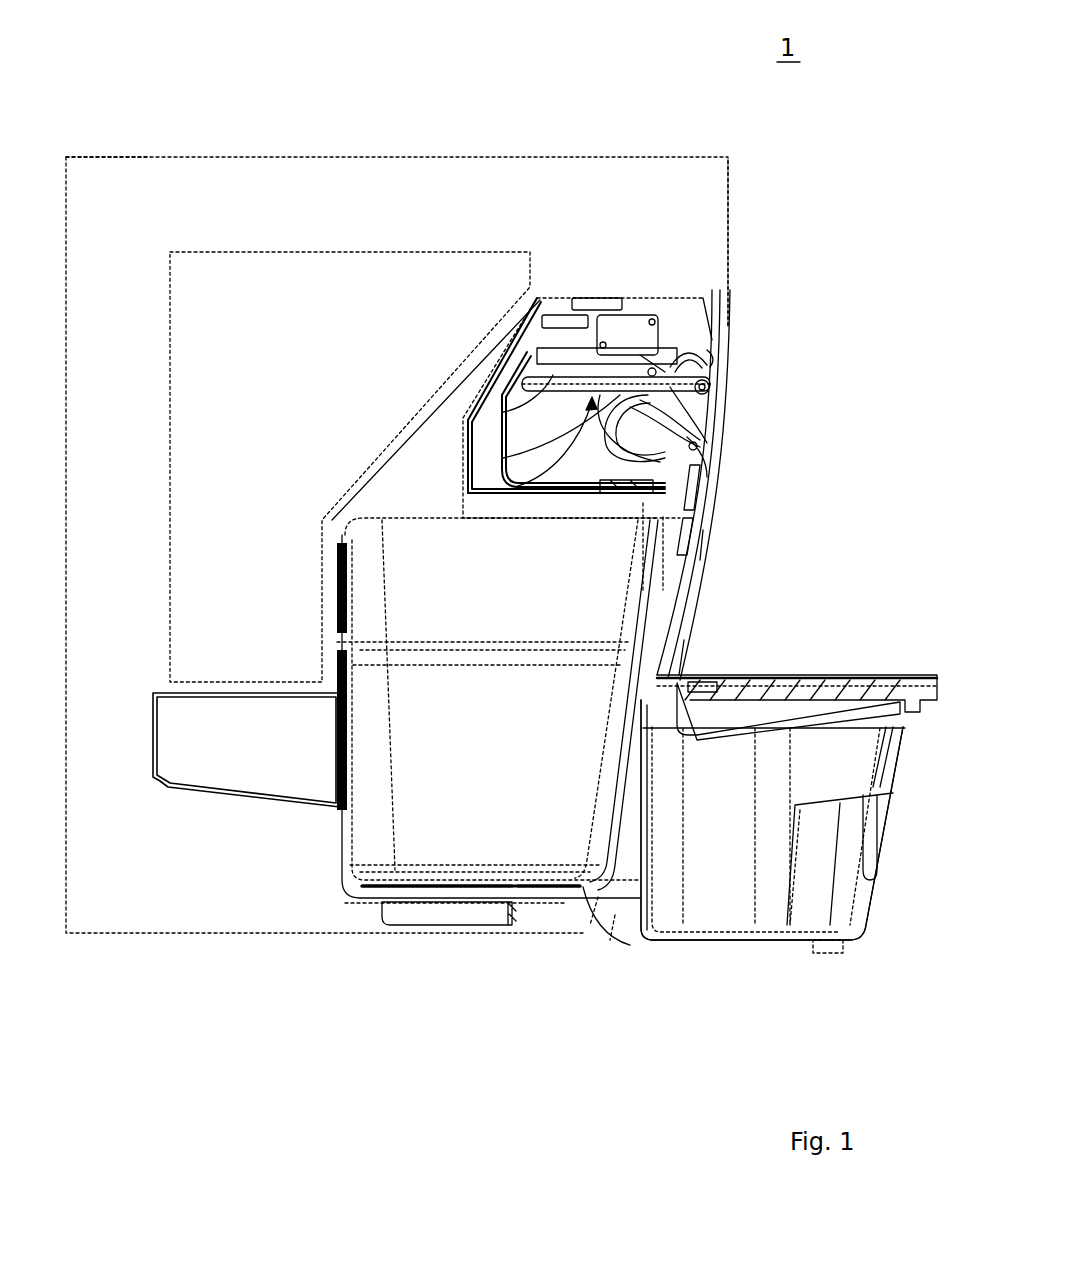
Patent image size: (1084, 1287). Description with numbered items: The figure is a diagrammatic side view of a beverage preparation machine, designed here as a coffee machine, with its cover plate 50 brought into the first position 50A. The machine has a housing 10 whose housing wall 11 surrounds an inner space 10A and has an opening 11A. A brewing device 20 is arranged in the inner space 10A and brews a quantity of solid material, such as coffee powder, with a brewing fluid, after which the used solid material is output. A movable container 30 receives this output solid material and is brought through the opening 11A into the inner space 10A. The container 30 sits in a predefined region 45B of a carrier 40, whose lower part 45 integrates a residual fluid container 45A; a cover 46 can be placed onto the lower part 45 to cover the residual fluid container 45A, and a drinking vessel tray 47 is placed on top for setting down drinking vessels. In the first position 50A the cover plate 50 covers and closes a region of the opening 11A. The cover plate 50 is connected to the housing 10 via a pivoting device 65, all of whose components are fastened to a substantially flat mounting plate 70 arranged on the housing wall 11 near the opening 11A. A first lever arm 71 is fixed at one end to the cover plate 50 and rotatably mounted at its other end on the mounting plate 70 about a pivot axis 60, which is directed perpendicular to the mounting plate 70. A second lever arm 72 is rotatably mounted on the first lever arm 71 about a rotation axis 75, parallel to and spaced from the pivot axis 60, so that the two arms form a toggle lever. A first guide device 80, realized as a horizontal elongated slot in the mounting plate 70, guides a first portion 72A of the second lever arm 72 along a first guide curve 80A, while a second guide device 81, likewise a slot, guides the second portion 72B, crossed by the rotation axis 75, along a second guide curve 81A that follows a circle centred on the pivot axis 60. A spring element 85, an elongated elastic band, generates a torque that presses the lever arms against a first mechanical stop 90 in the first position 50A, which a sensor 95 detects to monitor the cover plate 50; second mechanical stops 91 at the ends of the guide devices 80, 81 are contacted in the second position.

The housing 10 is at (728, 157).
The inner space 10A is at (136, 186).
The housing wall 11 is at (735, 207).
The opening 11A is at (698, 635).
The brewing device 20 is at (324, 378).
The container 30 is at (503, 606).
The carrier 40 is at (893, 860).
The guide 45 is at (628, 945).
The residual fluid container 45A is at (235, 770).
The predefined region 45B is at (620, 873).
The cover 46 is at (740, 718).
The drinking vessel tray 47 is at (860, 675).
The cover plate 50 is at (703, 526).
The first position 50A is at (706, 573).
The pivot axis 60 is at (708, 390).
The pivoting device 65 is at (710, 343).
The mounting plate 70 is at (513, 388).
The first lever arm 71 is at (640, 458).
The second lever arm 72 is at (587, 377).
The first portion 72A is at (528, 368).
The second portion 72B is at (657, 361).
The rotation axis 75 is at (697, 362).
The first guide device 80 is at (517, 407).
The first guide curve 80A is at (480, 434).
The second guide device 81 is at (702, 434).
The second guide curve 81A is at (703, 462).
The spring element 85 is at (688, 417).
The first mechanical stop 90 is at (647, 347).
The second mechanical stop 91 is at (702, 448).
The sensor 95 is at (630, 340).